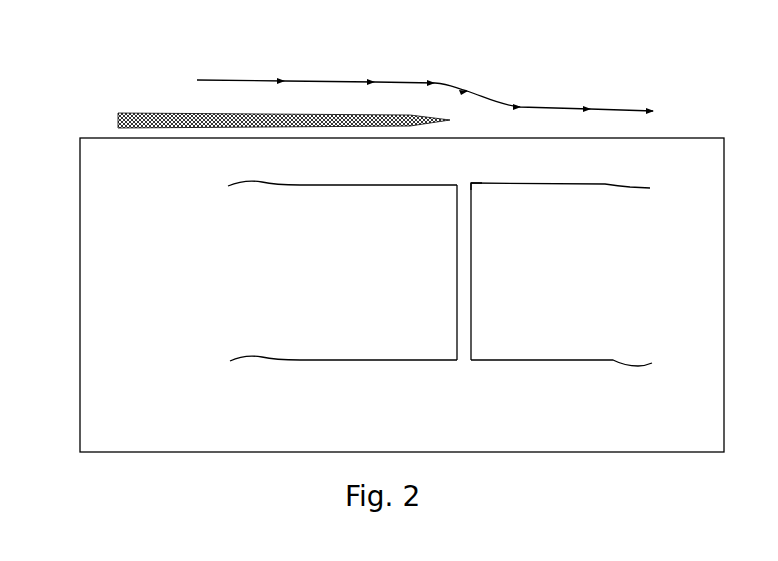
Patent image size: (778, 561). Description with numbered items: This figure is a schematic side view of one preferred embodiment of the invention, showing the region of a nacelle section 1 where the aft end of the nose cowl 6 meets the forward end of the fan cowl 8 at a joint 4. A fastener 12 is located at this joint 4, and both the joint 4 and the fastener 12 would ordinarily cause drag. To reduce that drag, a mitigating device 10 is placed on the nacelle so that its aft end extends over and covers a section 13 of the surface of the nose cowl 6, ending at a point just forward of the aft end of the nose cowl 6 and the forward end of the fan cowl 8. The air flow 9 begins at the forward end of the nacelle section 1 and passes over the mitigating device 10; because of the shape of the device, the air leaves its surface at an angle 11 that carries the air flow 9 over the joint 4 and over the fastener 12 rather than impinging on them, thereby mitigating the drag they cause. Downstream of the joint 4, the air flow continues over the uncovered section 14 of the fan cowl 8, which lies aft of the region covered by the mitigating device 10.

The nacelle section 1 is at (72, 188).
The joint 4 is at (463, 375).
The nose cowl 6 is at (360, 377).
The fan cowl 8 is at (553, 377).
The air flow 9 is at (176, 79).
The mitigating device 10 is at (104, 119).
The angle 11 is at (508, 82).
The fastener 12 is at (493, 180).
The section of the surface of the nose cowl 13 is at (215, 185).
The uncovered section of the fan cowl 14 is at (664, 190).